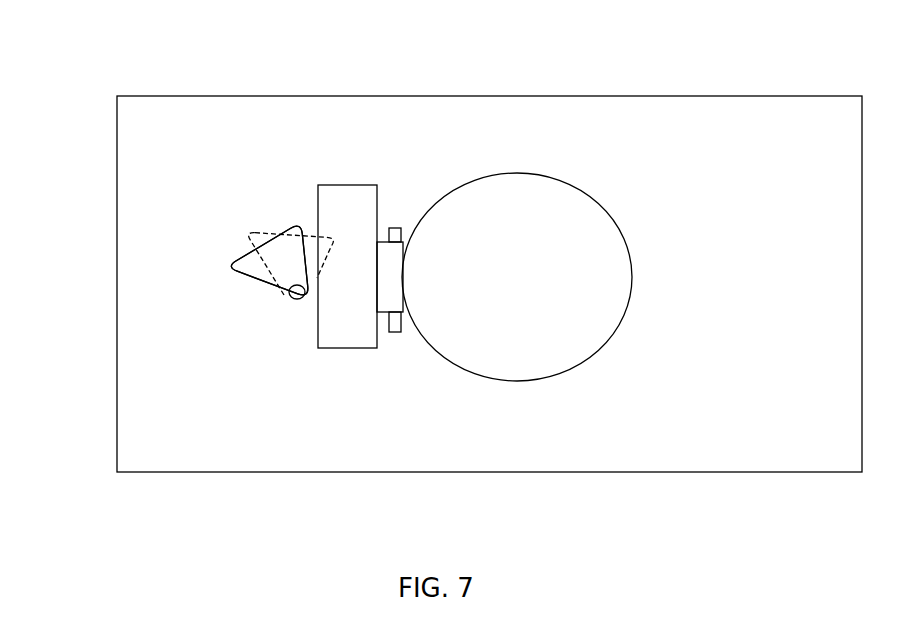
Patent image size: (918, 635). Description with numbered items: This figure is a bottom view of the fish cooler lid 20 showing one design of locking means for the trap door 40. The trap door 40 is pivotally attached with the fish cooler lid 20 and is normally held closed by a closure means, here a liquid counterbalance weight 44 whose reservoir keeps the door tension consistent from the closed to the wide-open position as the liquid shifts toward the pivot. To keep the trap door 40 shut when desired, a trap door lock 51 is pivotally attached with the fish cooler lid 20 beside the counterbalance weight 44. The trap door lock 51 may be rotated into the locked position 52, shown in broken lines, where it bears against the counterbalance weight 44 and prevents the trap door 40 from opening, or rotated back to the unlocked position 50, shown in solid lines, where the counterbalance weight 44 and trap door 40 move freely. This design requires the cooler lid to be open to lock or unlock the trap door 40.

The fish cooler lid 20 is at (805, 458).
The trap door 40 is at (593, 323).
The counterbalance weight 44 is at (333, 313).
The unlocked position 50 is at (253, 277).
The trap door lock 51 is at (283, 253).
The locked position 52 is at (247, 232).